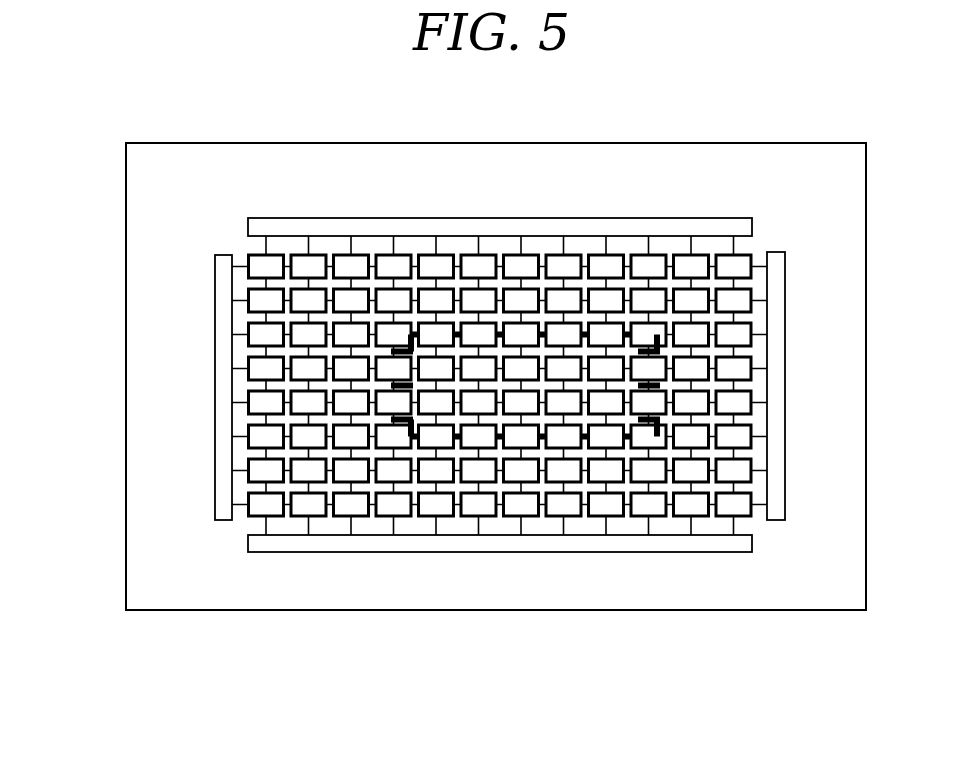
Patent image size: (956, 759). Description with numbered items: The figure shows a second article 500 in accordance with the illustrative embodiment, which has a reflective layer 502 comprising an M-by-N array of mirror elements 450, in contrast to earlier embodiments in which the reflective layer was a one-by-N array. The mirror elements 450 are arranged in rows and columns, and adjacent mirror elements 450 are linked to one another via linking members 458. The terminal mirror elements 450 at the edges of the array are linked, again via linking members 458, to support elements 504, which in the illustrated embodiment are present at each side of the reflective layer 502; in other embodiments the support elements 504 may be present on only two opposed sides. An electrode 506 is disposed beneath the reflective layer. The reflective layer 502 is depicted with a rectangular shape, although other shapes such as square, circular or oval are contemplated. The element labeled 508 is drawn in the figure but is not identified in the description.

The article 500 is at (588, 122).
The reflective layer 502 is at (615, 570).
The support elements 504 is at (560, 221).
The electrode 506 is at (498, 450).
The housing frame 508 is at (126, 349).
The mirror elements 450 is at (481, 262).
The linking members 458 is at (286, 268).